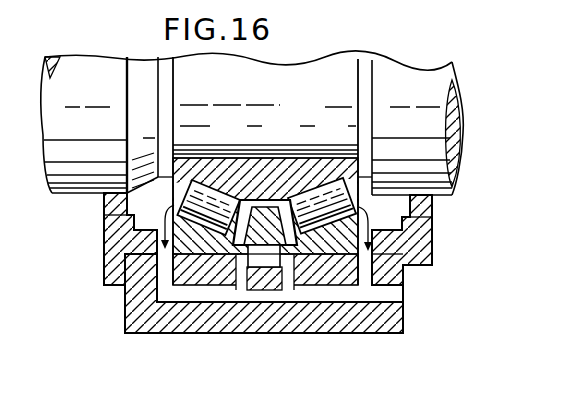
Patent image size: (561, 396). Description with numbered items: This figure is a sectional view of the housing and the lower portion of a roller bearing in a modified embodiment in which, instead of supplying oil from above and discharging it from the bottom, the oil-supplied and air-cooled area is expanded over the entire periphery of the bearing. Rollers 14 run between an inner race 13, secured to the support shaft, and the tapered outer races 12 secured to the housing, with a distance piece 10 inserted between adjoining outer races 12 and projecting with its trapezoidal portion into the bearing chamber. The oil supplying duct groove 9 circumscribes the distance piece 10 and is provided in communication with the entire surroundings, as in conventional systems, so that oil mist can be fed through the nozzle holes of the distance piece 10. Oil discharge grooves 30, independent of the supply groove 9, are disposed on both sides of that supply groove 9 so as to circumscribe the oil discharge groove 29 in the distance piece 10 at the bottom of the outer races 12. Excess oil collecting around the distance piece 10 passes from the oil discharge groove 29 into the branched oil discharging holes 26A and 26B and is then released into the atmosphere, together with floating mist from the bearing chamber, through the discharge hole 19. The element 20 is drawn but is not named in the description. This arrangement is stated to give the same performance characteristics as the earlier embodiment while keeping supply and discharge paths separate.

The duct groove 9 is at (263, 263).
The distance piece 10 is at (250, 200).
The outer race 12 is at (337, 250).
The inner race 13 is at (331, 168).
The roller 14 is at (313, 193).
The oil discharging hole 19 is at (388, 300).
The wedge piece 20 is at (265, 200).
The branched oil discharging hole 26A is at (167, 292).
The branched oil discharging hole 26B is at (378, 276).
The oil discharge groove 29 is at (294, 262).
The oil discharge groove 30 is at (230, 257).